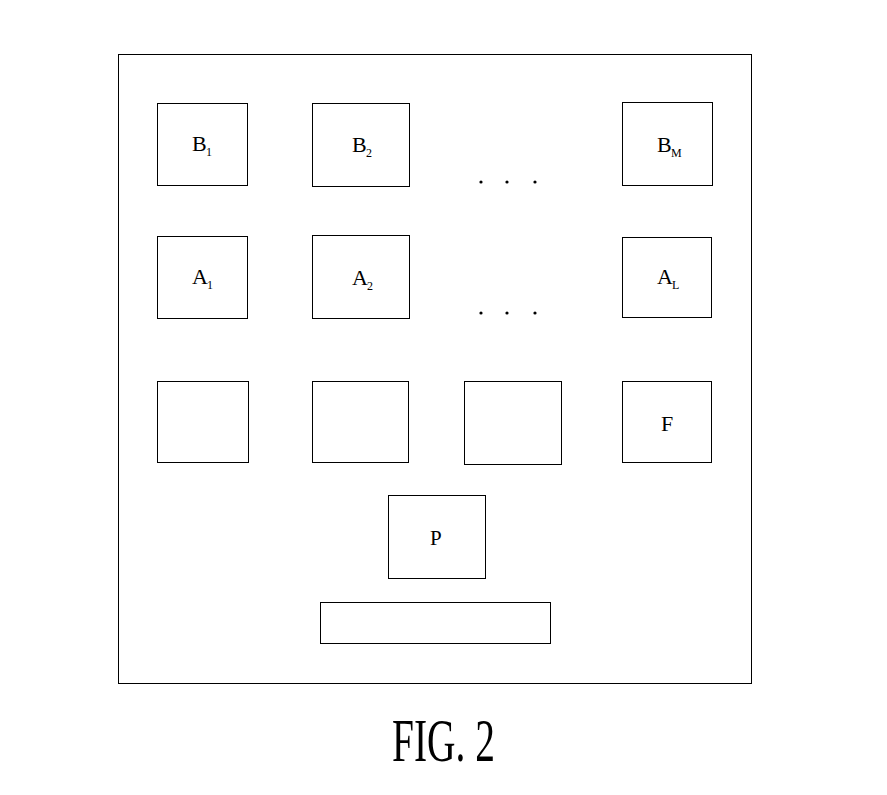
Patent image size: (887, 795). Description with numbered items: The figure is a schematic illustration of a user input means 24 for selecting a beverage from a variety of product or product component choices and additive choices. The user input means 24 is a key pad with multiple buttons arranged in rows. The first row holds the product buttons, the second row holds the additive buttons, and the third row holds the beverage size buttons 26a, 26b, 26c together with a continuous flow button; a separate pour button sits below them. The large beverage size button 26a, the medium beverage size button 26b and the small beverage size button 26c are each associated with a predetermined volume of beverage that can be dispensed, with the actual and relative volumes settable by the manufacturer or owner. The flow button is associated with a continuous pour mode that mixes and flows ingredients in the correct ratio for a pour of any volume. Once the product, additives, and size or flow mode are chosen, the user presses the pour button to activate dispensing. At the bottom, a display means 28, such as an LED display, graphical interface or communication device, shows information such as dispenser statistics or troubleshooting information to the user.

The user input means 24 is at (109, 48).
The beverage size button 26a is at (205, 462).
The beverage size button 26b is at (352, 462).
The beverage size button 26c is at (520, 465).
The display means 28 is at (550, 602).